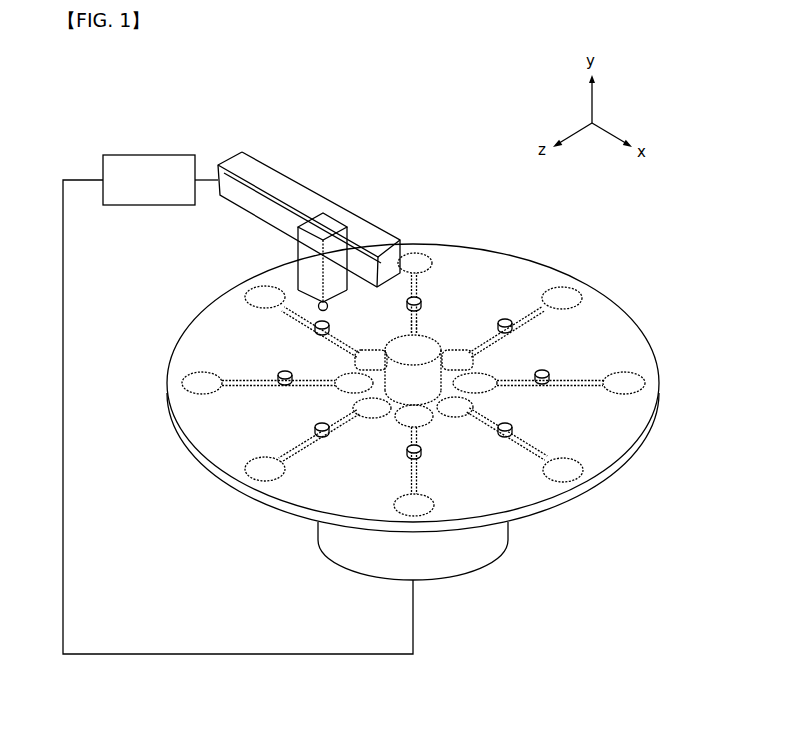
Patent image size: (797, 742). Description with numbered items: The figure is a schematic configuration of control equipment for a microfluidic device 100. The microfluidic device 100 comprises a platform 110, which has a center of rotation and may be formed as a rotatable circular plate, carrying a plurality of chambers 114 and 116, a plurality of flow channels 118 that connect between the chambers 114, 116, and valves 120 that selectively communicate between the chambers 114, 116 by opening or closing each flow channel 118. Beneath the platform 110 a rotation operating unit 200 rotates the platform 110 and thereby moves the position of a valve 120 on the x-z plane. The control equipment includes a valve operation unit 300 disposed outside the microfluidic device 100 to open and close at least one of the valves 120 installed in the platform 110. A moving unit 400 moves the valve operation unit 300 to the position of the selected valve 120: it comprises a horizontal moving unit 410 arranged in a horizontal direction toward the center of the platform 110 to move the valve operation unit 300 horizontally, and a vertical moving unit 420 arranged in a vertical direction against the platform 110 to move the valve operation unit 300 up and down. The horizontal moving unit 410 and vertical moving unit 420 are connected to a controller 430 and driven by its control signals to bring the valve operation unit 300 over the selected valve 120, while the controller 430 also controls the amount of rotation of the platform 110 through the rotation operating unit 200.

The microfluidic device 100 is at (410, 409).
The platform 110 is at (612, 315).
The chamber 114 is at (455, 420).
The chamber 116 is at (565, 481).
The flow channel 118 is at (513, 440).
The valve 120 is at (311, 326).
The rotation operating unit 200 is at (347, 556).
The valve operation unit 300 is at (345, 297).
The moving unit 400 is at (305, 195).
The horizontal moving unit 410 is at (245, 163).
The vertical moving unit 420 is at (296, 268).
The controller 430 is at (152, 152).